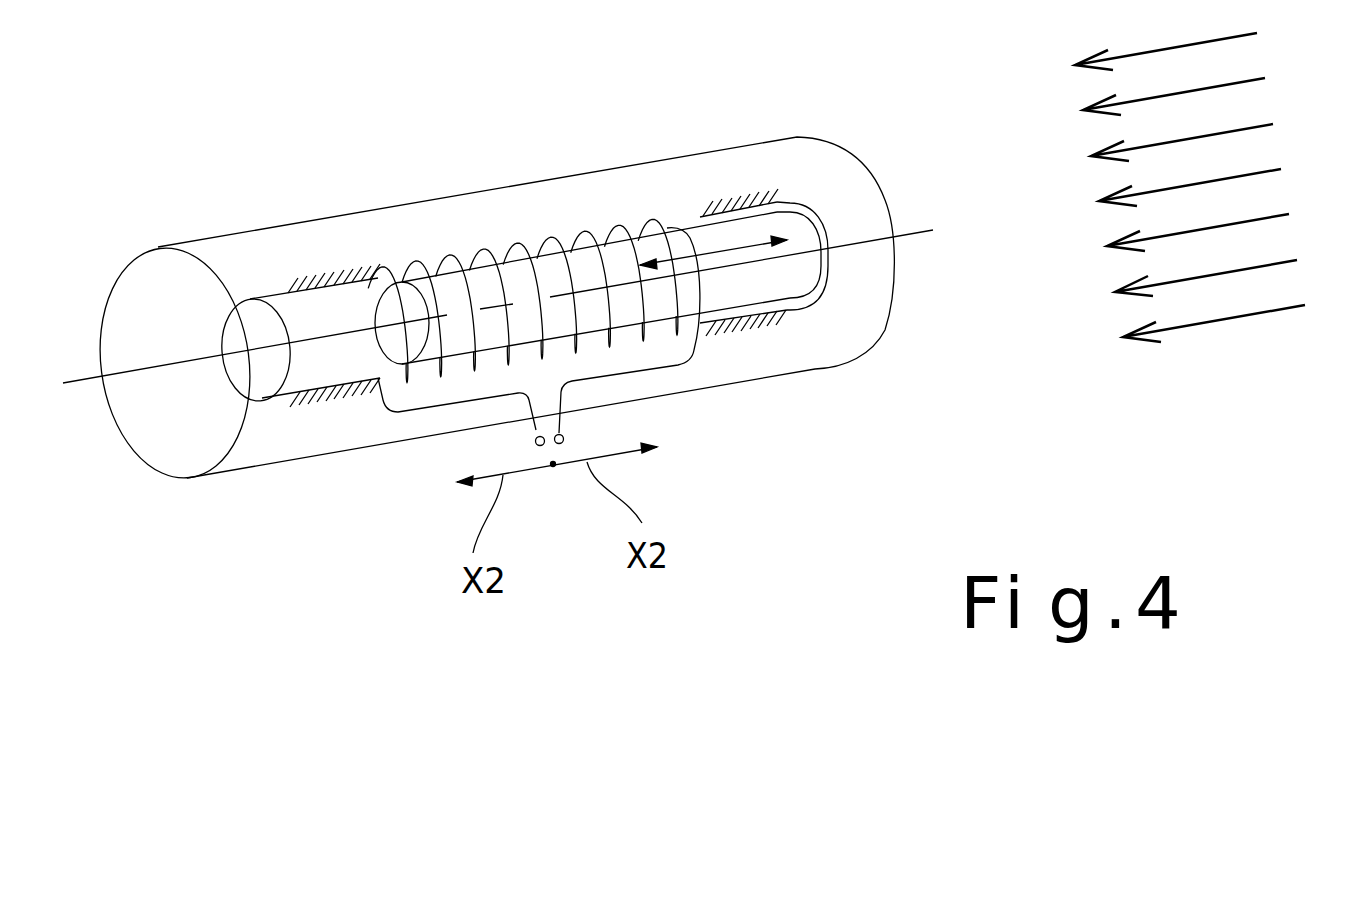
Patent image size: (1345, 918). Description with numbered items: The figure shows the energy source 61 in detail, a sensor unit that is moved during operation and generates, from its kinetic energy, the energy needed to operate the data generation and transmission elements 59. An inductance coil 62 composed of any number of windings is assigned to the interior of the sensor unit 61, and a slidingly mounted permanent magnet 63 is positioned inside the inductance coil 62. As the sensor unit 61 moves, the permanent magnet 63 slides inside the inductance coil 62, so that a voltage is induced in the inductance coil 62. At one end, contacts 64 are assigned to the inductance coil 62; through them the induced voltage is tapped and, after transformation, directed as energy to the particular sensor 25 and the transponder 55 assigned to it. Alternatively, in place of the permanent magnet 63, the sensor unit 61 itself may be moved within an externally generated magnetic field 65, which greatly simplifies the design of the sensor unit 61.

The sensor 25 is at (207, 260).
The transponder 55 is at (828, 185).
The data generation and transmission elements 59 is at (543, 229).
The energy source 61 is at (397, 148).
The inductance coil 62 is at (585, 230).
The permanent magnet 63 is at (757, 292).
The contacts 64 is at (512, 443).
The magnetic field 65 is at (1197, 323).